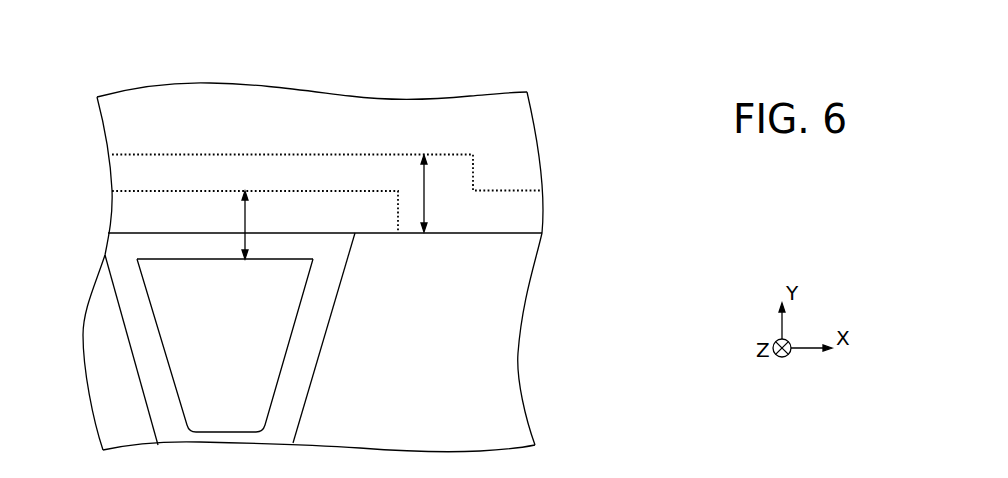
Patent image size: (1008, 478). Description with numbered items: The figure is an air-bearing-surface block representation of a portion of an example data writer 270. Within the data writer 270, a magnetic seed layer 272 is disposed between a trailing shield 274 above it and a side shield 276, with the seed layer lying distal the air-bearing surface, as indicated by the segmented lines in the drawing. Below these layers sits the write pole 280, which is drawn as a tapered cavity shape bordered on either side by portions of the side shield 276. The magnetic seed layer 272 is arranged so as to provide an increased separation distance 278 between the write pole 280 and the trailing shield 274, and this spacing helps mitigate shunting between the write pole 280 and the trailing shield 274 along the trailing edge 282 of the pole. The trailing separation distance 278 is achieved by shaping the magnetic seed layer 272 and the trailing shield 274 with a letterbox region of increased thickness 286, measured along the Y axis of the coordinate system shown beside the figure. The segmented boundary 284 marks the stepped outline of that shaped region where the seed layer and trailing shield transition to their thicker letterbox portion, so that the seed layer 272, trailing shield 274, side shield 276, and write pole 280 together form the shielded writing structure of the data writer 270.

The data writer 270 is at (107, 60).
The magnetic seed layer 272 is at (167, 182).
The trailing shield 274 is at (157, 132).
The side shield 276 is at (142, 426).
The separation distance 278 is at (247, 208).
The write pole 280 is at (242, 342).
The trailing edge 282 is at (209, 263).
The stepped boundary 284 is at (519, 166).
The letterbox region of increased thickness 286 is at (445, 193).